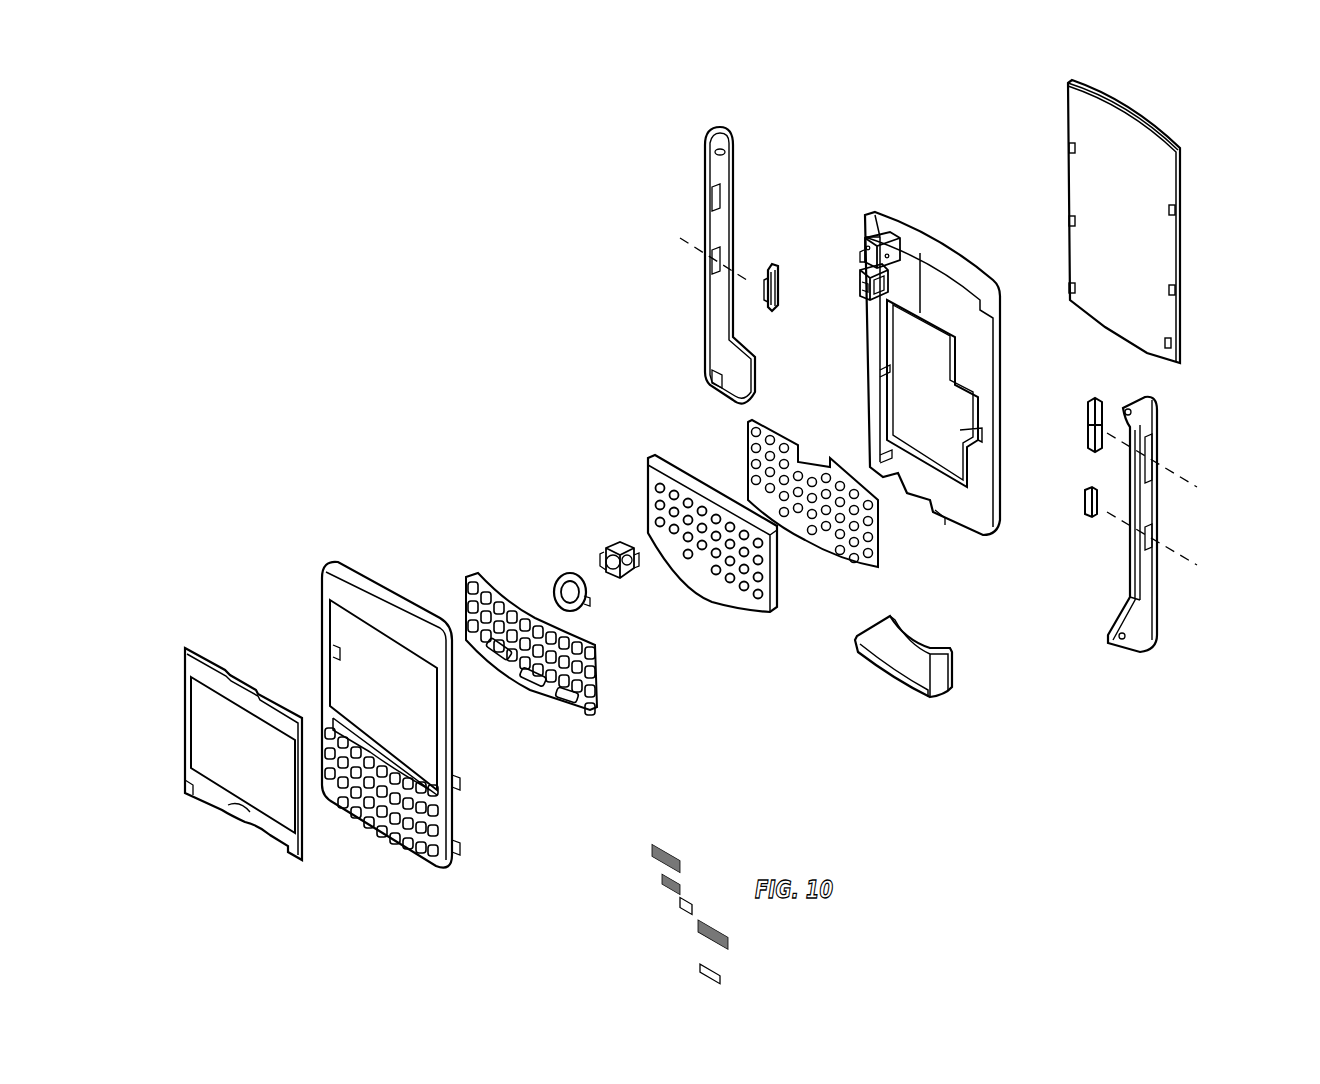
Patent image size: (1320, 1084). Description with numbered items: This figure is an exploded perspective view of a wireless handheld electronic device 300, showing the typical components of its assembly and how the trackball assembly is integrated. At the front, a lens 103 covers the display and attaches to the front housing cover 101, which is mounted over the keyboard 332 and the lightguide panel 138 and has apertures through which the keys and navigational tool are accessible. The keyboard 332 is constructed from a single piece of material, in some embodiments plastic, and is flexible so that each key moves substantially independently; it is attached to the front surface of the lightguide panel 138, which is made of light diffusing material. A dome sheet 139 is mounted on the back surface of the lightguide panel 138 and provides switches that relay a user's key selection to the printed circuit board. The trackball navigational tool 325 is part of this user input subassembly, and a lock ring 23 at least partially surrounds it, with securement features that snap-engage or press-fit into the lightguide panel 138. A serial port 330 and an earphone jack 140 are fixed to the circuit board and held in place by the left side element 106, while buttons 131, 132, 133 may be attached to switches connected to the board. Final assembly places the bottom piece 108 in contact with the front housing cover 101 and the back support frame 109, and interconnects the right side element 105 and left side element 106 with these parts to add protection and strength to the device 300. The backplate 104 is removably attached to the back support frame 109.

The handheld electronic device 300 is at (503, 168).
The lens 103 is at (216, 650).
The front housing cover 101 is at (348, 560).
The keyboard 332 is at (548, 704).
The lock ring 23 is at (590, 578).
The trackball navigational tool 325 is at (640, 570).
The lightguide panel 138 is at (784, 566).
The dome sheet 139 is at (888, 530).
The bottom piece 108 is at (877, 672).
The left side element 106 is at (703, 307).
The button 131 is at (776, 313).
The earphone jack 140 is at (862, 240).
The serial port 330 is at (860, 274).
The back support frame 109 is at (1002, 362).
The button 132 is at (1084, 422).
The button 133 is at (1082, 504).
The right side element 105 is at (1130, 568).
The backplate 104 is at (1172, 134).